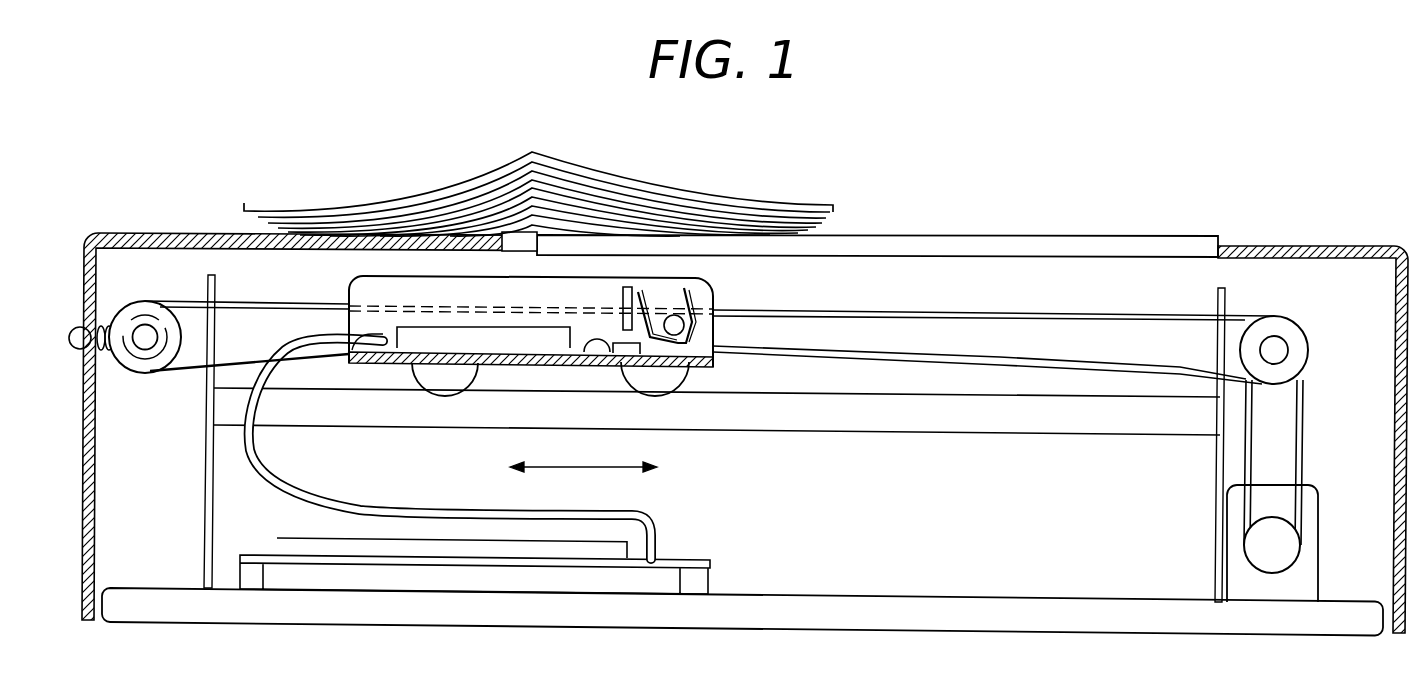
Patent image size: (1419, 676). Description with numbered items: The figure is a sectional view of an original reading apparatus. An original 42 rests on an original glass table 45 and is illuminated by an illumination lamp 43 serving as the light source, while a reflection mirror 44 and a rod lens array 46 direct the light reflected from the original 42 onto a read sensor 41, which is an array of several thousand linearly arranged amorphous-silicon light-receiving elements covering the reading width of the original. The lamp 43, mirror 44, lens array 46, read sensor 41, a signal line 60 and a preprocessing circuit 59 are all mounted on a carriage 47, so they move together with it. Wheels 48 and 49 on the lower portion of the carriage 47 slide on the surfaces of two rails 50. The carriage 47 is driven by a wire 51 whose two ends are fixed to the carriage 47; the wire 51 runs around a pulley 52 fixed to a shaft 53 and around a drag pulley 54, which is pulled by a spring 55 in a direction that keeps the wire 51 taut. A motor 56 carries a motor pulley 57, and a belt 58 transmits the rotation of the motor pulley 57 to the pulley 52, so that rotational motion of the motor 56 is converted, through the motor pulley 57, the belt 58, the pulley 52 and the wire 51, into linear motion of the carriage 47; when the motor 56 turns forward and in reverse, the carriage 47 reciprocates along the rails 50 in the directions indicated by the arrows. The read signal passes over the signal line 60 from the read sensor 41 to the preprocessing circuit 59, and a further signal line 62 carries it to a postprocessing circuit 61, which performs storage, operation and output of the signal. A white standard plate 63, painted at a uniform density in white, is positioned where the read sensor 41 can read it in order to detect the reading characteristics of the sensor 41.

The read sensor 41 is at (606, 362).
The original 42 is at (566, 177).
The illumination lamp 43 is at (676, 326).
The reflection mirror 44 is at (692, 292).
The original glass table 45 is at (978, 238).
The rod lens array 46 is at (620, 297).
The carriage 47 is at (358, 293).
The wheel 48 is at (663, 375).
The wheel 49 is at (457, 373).
The rails 50 is at (1065, 417).
The wire 51 is at (981, 315).
The pulley 52 is at (1275, 330).
The shaft 53 is at (1278, 350).
The drag pulley 54 is at (140, 310).
The spring 55 is at (69, 341).
The motor 56 is at (1308, 504).
The motor pulley 57 is at (1285, 548).
The belt 58 is at (1305, 433).
The preprocessing circuit 59 is at (420, 335).
The signal line 60 is at (553, 335).
The postprocessing circuit 61 is at (315, 551).
The signal line 62 is at (281, 478).
The white standard plate 63 is at (516, 252).